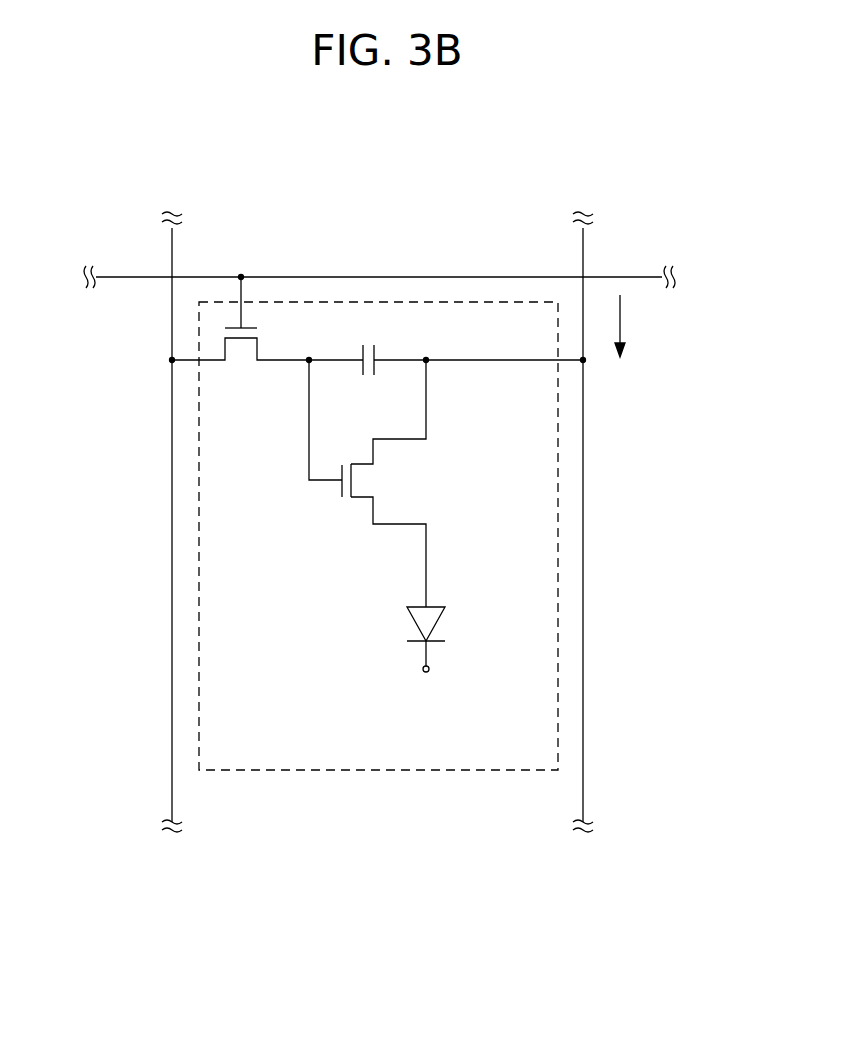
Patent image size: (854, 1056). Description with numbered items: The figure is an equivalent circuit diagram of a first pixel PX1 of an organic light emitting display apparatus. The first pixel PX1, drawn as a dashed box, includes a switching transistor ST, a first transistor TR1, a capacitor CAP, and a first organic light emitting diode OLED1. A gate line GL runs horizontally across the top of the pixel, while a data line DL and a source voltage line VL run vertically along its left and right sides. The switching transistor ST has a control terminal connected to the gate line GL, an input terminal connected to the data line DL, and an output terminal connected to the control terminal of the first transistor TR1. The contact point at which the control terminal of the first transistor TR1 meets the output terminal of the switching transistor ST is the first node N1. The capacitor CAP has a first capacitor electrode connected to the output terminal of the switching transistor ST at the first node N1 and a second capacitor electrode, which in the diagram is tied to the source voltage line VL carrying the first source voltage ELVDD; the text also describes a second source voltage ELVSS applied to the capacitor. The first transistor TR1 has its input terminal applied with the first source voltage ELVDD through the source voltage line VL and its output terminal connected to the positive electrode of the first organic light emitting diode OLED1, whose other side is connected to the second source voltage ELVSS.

The data line DL is at (172, 511).
The source voltage line VL is at (583, 511).
The gate line GL is at (364, 277).
The first source voltage ELVDD is at (646, 326).
The first pixel PX1 is at (283, 772).
The switching transistor ST is at (240, 366).
The first node N1 is at (308, 348).
The capacitor CAP is at (382, 340).
The first transistor TR1 is at (334, 502).
The first organic light emitting diode OLED1 is at (408, 628).
The second source voltage ELVSS is at (418, 669).